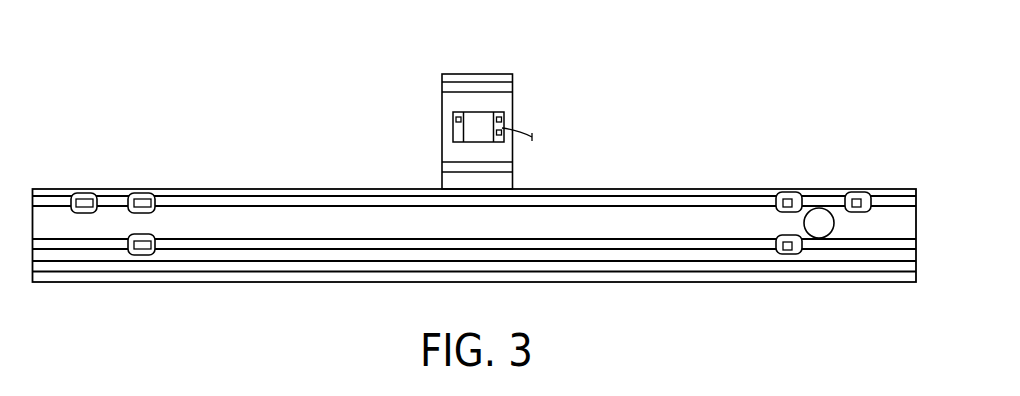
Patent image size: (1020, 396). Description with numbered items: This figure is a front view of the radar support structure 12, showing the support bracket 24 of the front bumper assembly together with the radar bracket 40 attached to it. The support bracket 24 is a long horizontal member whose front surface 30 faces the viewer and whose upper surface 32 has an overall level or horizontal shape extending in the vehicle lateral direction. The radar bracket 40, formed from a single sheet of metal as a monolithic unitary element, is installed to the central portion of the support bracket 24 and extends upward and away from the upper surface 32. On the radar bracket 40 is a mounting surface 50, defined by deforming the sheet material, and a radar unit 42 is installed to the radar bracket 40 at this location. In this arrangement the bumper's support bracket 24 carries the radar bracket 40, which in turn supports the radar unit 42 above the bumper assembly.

The radar support structure 12 is at (746, 101).
The support bracket 24 is at (890, 223).
The front surface 30 is at (475, 224).
The upper surface 32 is at (668, 188).
The radar bracket 40 is at (478, 111).
The radar unit 42 is at (475, 130).
The mounting surface 50 is at (498, 101).